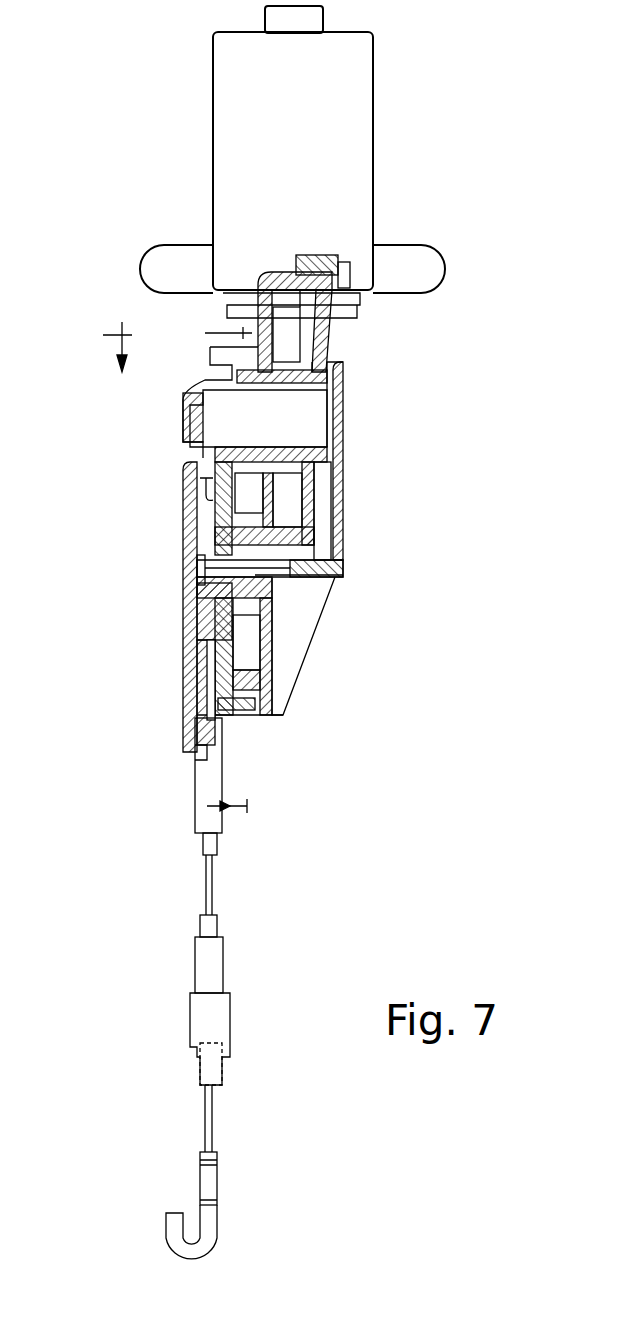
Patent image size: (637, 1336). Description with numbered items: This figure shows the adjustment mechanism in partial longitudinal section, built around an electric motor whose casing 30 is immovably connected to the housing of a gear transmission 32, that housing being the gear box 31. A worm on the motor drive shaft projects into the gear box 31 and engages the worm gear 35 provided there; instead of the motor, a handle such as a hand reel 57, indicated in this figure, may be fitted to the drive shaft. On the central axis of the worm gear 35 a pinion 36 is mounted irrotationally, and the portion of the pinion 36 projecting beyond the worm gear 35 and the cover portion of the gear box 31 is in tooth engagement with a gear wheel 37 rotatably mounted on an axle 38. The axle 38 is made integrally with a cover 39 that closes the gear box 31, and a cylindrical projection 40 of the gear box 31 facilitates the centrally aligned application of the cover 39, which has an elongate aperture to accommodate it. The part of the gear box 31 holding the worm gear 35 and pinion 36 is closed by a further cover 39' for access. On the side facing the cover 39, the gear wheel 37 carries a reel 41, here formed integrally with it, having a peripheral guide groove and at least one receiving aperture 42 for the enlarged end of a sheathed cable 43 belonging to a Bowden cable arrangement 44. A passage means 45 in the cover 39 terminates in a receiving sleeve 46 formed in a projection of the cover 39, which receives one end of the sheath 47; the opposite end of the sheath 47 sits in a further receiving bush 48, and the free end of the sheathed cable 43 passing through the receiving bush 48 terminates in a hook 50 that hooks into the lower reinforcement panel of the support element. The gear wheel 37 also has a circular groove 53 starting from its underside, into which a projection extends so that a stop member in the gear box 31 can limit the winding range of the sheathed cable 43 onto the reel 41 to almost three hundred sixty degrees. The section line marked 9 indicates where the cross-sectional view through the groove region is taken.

The casing 30 is at (233, 150).
The hand reel 57 is at (163, 270).
The section line 9 is at (176, 557).
The worm gear 35 is at (318, 343).
The gear transmission 32 is at (340, 400).
The pinion 36 is at (310, 433).
The receiving aperture 42 is at (195, 497).
The axle 38 is at (195, 545).
The cover 39' is at (354, 511).
The cylindrical projection 40 is at (190, 590).
The reel 41 is at (185, 638).
The circular groove 53 is at (255, 635).
The cover 39 is at (146, 611).
The gear wheel 37 is at (262, 695).
The gear box 31 is at (305, 598).
The receiving sleeve 46 is at (222, 748).
The passage means 45 is at (250, 725).
The sheathed cable 43 is at (188, 697).
The Bowden cable arrangement 44 is at (222, 815).
The sheath 47 is at (228, 964).
The receiving bush 48 is at (200, 1073).
The hook 50 is at (218, 1218).